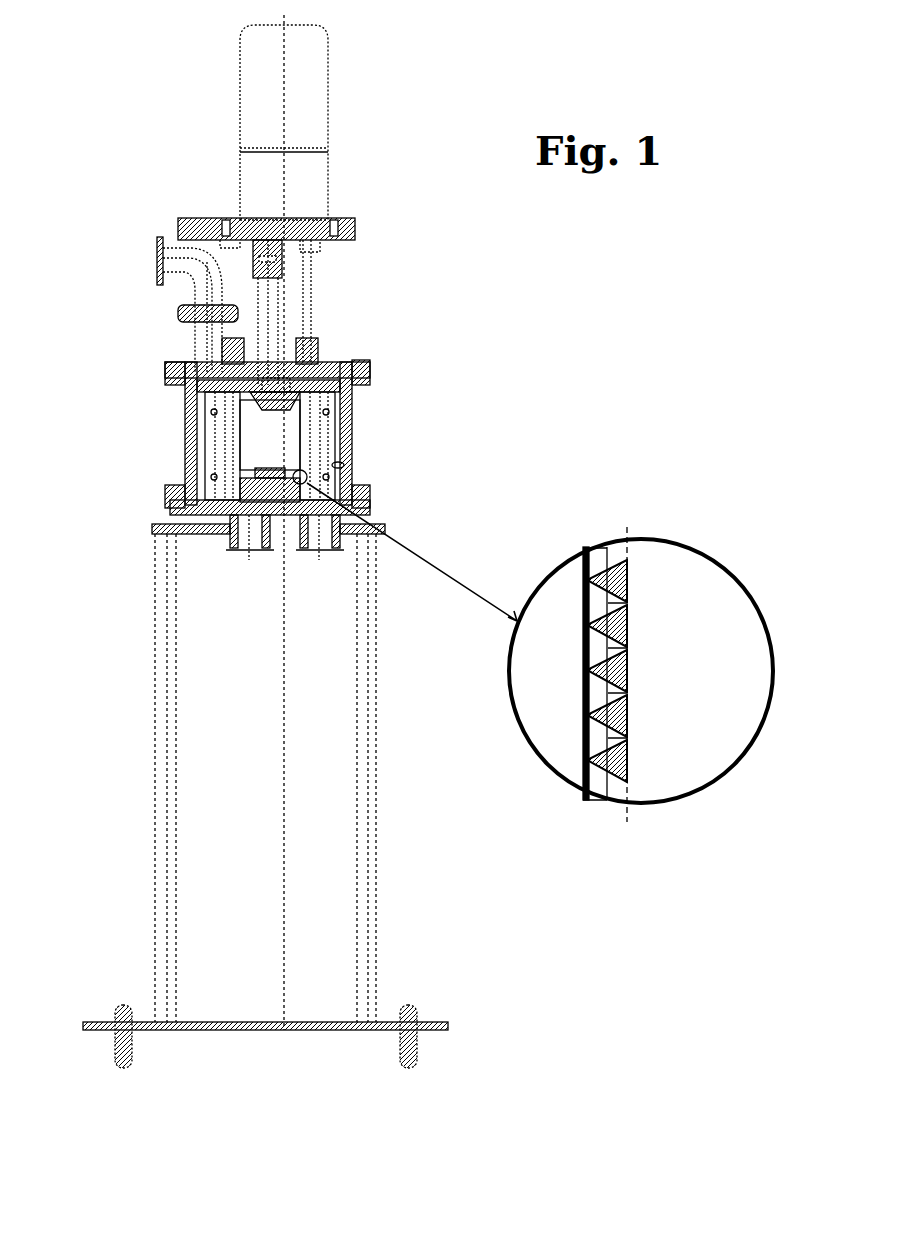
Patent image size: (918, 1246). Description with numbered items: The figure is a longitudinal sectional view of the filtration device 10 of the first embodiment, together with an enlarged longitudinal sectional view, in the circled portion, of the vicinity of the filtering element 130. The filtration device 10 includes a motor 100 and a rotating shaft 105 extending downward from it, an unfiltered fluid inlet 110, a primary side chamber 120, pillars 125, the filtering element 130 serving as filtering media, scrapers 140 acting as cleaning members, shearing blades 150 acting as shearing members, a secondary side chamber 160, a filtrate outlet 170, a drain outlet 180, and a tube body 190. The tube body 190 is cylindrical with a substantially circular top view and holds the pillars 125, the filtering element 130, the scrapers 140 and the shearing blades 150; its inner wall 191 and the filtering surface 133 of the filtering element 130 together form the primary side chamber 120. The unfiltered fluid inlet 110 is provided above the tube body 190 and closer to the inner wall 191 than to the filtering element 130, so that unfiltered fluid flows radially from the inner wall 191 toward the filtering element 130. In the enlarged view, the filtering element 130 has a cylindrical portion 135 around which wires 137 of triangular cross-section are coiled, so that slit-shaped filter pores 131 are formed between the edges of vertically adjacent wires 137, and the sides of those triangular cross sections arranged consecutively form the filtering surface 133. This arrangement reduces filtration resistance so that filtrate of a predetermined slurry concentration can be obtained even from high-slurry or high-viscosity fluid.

The filtration device 10 is at (184, 109).
The motor 100 is at (325, 99).
The rotating shaft 105 is at (275, 302).
The unfiltered fluid inlet 110 is at (165, 262).
The primary side chamber 120 is at (200, 470).
The pillars 125 is at (215, 398).
The filtering element 130 is at (235, 445).
The filter pores 131 is at (628, 738).
The filtering surface 133 is at (627, 822).
The cylindrical portion 135 is at (600, 782).
The wire 137 is at (628, 573).
The scrapers 140 is at (210, 425).
The shearing blades 150 is at (230, 438).
The secondary side chamber 160 is at (250, 460).
The filtrate outlet 170 is at (252, 550).
The drain outlet 180 is at (322, 552).
The tube body 190 is at (345, 462).
The inner wall 191 is at (343, 474).